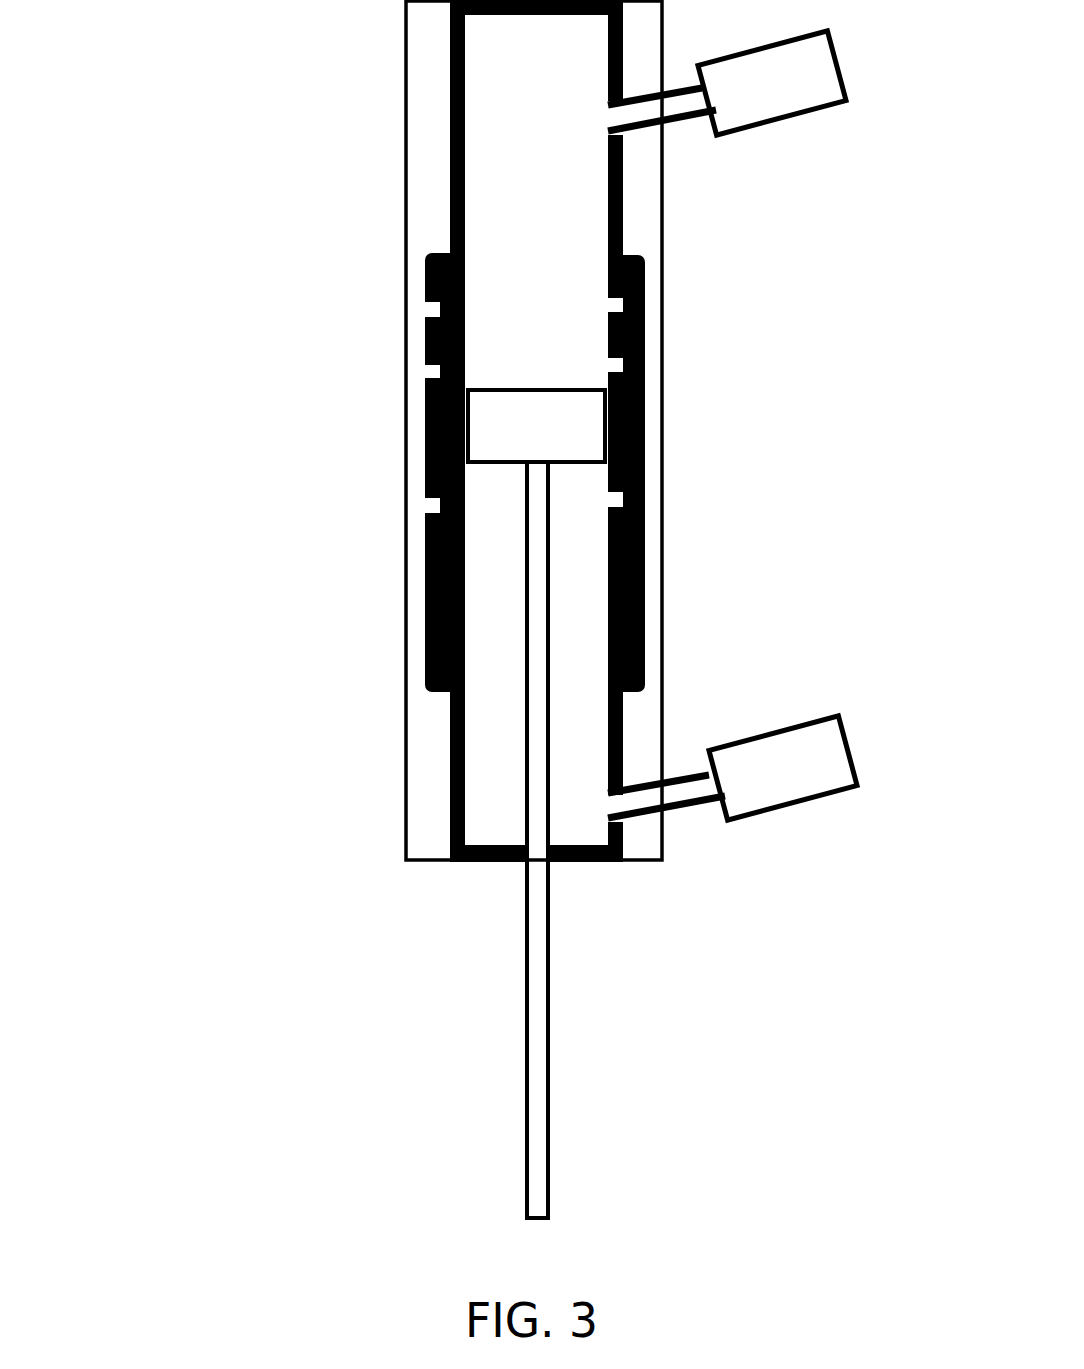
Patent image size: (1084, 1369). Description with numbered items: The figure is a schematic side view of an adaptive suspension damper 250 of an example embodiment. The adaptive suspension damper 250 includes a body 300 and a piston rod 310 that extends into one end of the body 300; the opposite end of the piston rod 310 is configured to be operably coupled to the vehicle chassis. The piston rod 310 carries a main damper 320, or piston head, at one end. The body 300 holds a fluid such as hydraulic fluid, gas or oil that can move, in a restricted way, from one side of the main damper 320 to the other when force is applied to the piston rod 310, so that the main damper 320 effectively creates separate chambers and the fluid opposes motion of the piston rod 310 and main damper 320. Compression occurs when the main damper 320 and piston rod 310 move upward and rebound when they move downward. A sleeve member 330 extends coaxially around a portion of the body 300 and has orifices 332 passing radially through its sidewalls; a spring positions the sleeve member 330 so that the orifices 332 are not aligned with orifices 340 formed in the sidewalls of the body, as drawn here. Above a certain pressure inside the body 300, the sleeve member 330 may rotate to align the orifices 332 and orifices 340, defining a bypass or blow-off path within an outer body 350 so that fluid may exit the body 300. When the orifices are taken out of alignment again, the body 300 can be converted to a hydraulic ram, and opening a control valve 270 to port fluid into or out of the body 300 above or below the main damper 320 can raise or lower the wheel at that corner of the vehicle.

The adaptive suspension damper 250 is at (496, 609).
The control valve 270 is at (778, 425).
The body 300 is at (477, 431).
The piston rod 310 is at (549, 1000).
The main damper 320 is at (536, 376).
The sleeve member 330 is at (380, 502).
The orifices 332 is at (381, 423).
The orifices 340 is at (651, 380).
The outer body 350 is at (472, 430).